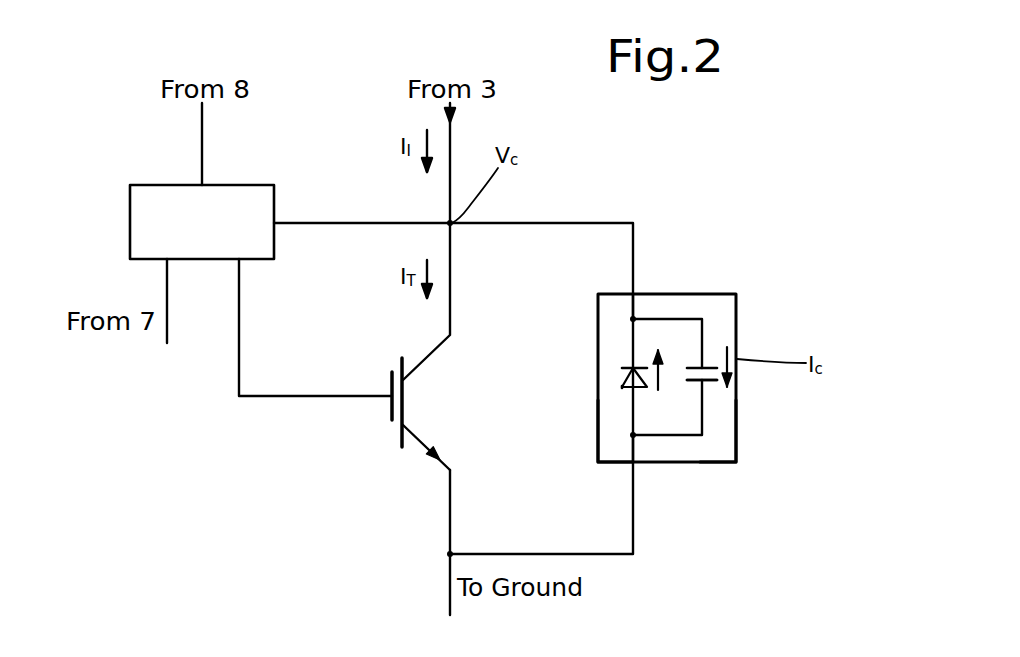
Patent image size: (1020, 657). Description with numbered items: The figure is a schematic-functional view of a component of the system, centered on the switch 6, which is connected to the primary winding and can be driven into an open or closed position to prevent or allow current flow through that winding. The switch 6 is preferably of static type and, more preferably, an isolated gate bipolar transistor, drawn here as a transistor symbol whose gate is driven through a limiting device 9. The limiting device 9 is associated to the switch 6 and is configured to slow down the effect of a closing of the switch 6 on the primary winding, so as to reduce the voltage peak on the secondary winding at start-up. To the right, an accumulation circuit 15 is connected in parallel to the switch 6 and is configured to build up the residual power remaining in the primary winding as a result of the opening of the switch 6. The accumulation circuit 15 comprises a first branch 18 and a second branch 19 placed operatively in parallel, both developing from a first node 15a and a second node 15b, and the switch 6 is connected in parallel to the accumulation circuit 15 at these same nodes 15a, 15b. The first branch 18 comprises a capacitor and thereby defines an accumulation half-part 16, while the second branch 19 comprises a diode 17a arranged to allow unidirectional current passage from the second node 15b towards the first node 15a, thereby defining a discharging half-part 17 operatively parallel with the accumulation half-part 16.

The switch 6 is at (372, 440).
The limiting device 9 is at (218, 234).
The accumulation circuit 15 is at (755, 335).
The first node 15a is at (638, 292).
The second node 15b is at (716, 381).
The accumulation half-part 16 is at (718, 418).
The discharging half-part 17 is at (645, 342).
The diode 17a is at (620, 380).
The first branch 18 is at (713, 338).
The second branch 19 is at (618, 420).